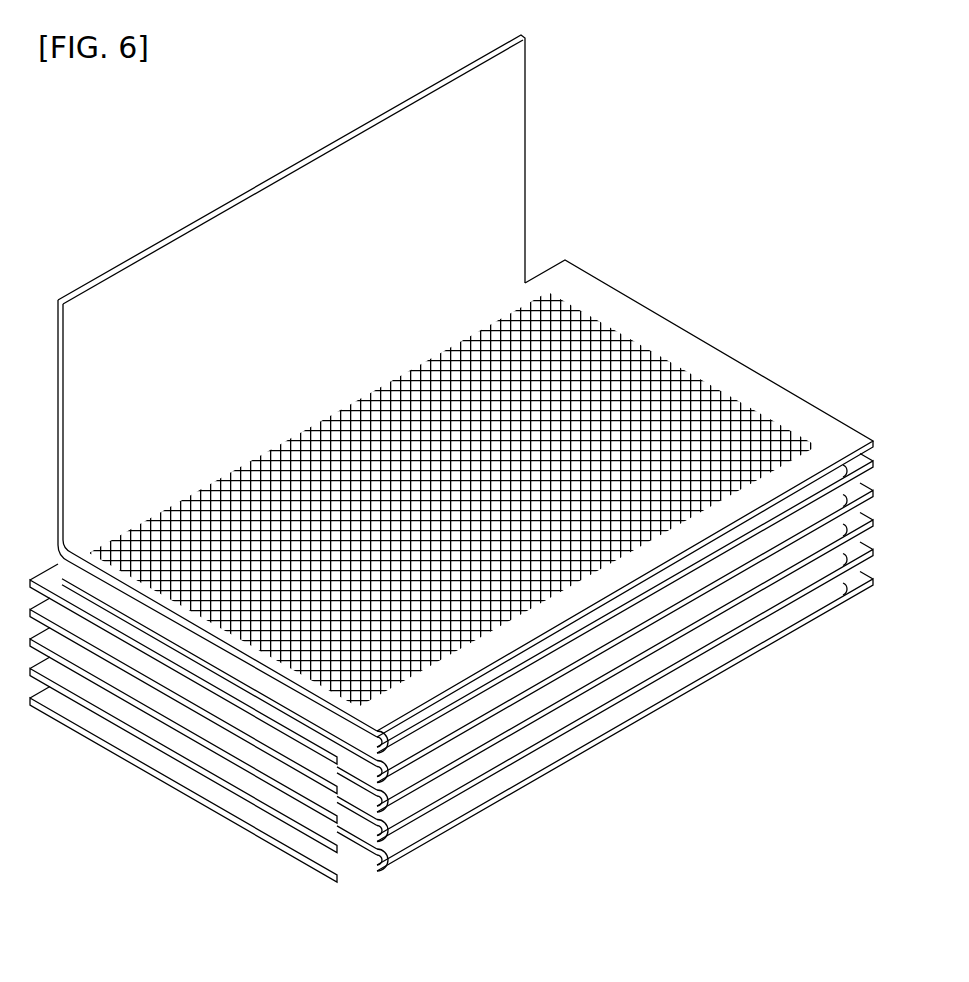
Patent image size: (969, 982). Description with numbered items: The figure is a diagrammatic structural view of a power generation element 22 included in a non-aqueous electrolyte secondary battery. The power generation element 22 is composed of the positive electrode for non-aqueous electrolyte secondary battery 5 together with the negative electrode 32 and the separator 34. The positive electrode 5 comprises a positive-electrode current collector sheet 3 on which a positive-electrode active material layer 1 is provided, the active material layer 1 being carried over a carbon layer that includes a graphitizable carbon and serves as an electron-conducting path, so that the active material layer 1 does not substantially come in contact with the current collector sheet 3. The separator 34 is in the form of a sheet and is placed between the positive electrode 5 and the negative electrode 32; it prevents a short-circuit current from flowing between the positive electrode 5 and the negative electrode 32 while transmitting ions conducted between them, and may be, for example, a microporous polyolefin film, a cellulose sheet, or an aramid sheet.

The power generation element 22 is at (793, 132).
The separator 34 is at (503, 182).
The negative electrode 32 is at (128, 692).
The positive electrode for non-aqueous electrolyte secondary battery 5 is at (730, 254).
The positive-electrode active material layer 1 is at (597, 348).
The positive-electrode current collector sheet 3 is at (665, 346).